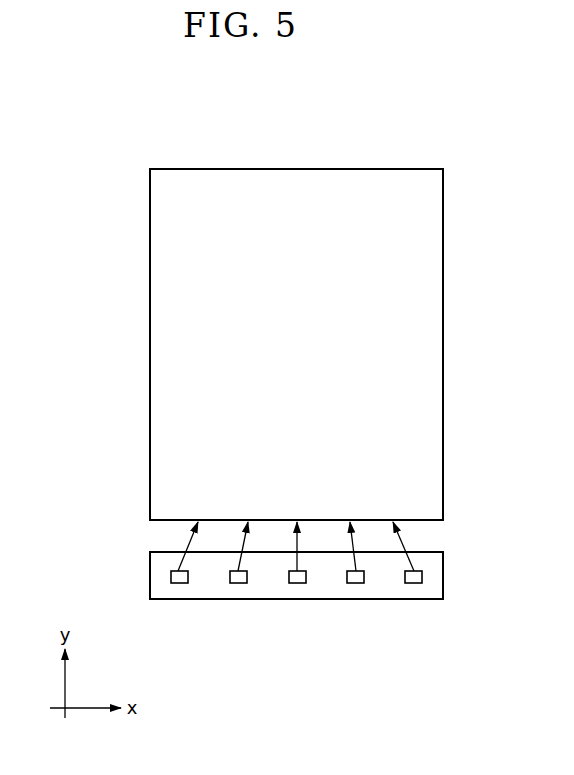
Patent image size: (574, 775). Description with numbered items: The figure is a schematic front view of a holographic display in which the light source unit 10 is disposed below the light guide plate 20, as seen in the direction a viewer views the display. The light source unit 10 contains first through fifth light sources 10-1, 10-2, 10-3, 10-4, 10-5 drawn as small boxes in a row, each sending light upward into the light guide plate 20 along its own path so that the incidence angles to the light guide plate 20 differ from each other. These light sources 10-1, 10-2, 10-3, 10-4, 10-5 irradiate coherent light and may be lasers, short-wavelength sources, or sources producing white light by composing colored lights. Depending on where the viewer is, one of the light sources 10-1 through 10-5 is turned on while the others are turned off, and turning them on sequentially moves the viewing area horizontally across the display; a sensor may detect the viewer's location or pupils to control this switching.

The light guide plate 20 is at (299, 176).
The light source unit 10 is at (437, 576).
The first light source 10-1 is at (176, 583).
The second light source 10-2 is at (237, 583).
The third light source 10-3 is at (297, 583).
The fourth light source 10-4 is at (357, 583).
The fifth light source 10-5 is at (415, 583).